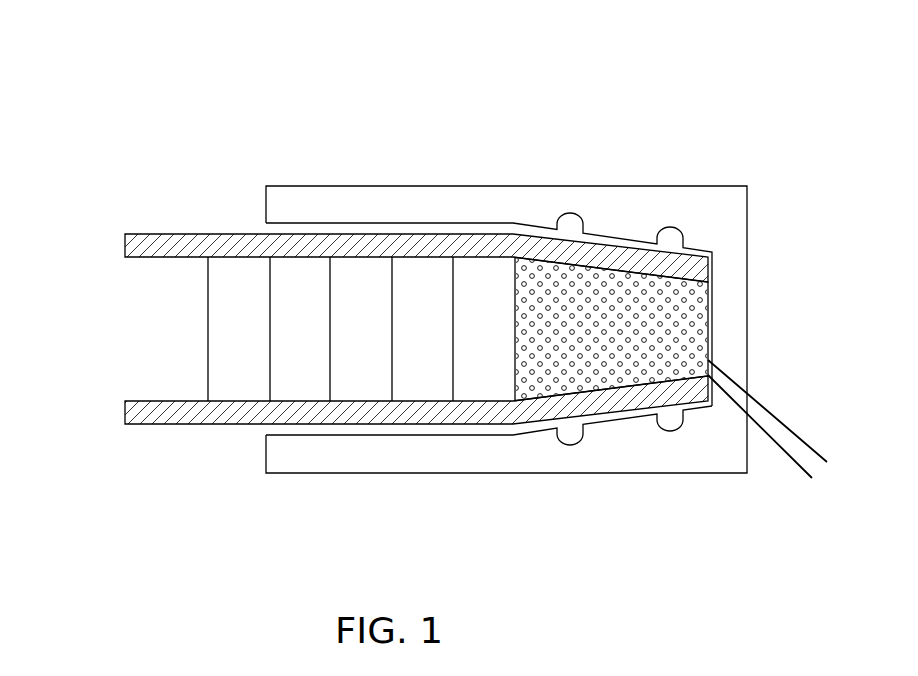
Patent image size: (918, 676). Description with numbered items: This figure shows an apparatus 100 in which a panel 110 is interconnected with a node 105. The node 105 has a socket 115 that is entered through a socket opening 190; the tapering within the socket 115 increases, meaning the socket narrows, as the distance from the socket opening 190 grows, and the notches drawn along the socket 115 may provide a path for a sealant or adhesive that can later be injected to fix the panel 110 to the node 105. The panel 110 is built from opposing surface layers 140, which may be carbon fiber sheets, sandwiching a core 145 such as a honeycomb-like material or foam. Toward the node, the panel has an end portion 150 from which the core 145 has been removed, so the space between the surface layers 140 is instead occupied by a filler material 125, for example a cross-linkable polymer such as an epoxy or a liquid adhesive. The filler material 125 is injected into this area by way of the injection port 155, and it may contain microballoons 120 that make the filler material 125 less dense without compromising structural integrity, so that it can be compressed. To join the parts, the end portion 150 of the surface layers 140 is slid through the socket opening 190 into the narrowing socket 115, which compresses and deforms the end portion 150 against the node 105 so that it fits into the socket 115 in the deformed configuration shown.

The apparatus 100 is at (719, 130).
The node 105 is at (747, 372).
The panel 110 is at (208, 425).
The socket 115 is at (627, 419).
The microballoons 120 is at (612, 297).
The filler material 125 is at (545, 274).
The surface layers 140 is at (165, 242).
The core 145 is at (115, 263).
The end portion 150 is at (736, 283).
The injection port 155 is at (813, 457).
The socket opening 190 is at (258, 225).